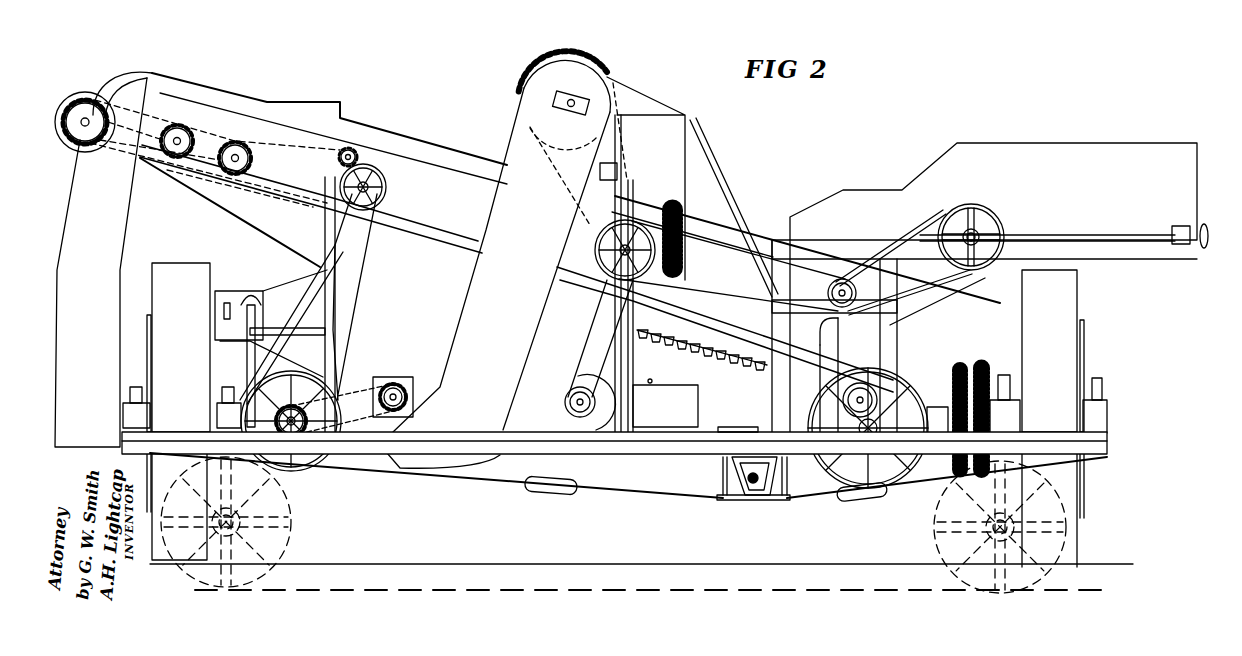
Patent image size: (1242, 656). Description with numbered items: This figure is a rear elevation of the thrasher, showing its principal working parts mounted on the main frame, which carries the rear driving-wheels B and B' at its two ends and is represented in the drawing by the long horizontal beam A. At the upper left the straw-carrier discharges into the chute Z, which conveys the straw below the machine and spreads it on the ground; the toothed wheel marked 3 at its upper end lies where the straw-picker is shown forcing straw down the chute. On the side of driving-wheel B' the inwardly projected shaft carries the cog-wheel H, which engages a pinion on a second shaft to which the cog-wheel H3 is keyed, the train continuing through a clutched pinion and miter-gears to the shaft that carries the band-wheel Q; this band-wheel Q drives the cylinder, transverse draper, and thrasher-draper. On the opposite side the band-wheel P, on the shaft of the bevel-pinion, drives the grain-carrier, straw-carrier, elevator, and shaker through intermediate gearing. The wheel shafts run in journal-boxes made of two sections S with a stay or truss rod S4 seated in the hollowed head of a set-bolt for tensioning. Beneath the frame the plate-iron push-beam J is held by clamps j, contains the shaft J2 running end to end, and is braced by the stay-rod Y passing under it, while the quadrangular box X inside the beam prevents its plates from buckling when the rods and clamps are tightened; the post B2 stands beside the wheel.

The drive sprocket 3 is at (78, 100).
The chute Z is at (103, 259).
The driving-wheel B is at (181, 411).
The post B2 is at (147, 340).
The driving-wheel B' is at (1049, 418).
The cog-wheel H3 is at (955, 370).
The cog-wheel H is at (981, 368).
The band-wheel Q is at (915, 373).
The journal-box section S is at (1108, 418).
The stay or truss rod S4 is at (1097, 368).
The main frame beam A is at (1130, 437).
The band-wheel P is at (312, 465).
The stay or truss rod Y is at (588, 498).
The push-beam J is at (722, 468).
The shaft J2 is at (753, 483).
The quadrangular box X is at (775, 500).
The clamps j is at (738, 427).